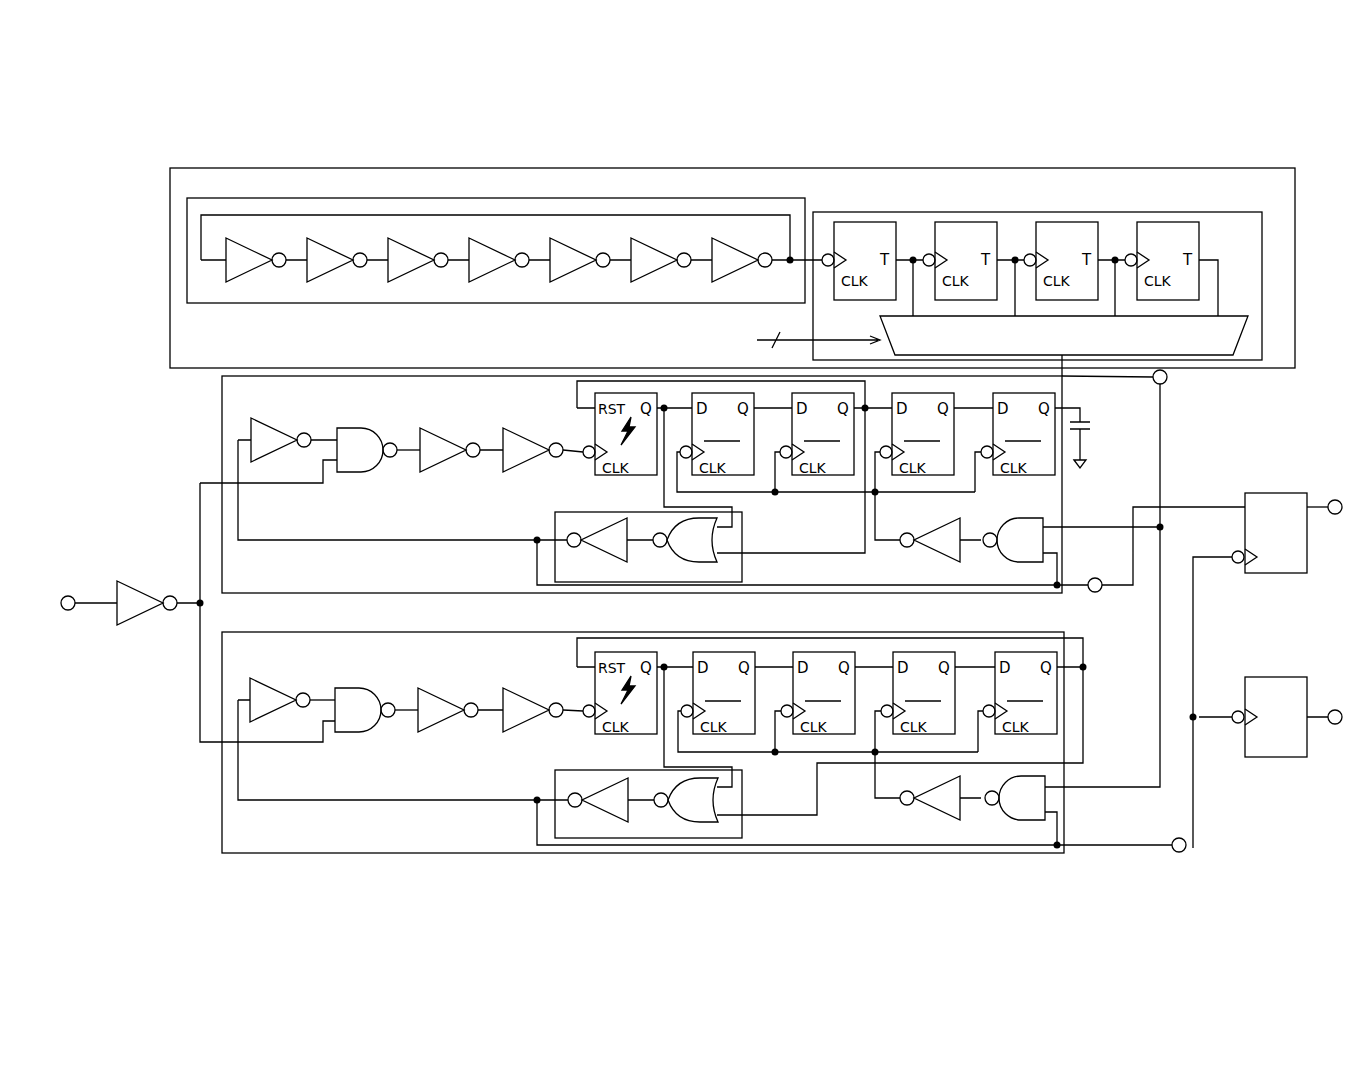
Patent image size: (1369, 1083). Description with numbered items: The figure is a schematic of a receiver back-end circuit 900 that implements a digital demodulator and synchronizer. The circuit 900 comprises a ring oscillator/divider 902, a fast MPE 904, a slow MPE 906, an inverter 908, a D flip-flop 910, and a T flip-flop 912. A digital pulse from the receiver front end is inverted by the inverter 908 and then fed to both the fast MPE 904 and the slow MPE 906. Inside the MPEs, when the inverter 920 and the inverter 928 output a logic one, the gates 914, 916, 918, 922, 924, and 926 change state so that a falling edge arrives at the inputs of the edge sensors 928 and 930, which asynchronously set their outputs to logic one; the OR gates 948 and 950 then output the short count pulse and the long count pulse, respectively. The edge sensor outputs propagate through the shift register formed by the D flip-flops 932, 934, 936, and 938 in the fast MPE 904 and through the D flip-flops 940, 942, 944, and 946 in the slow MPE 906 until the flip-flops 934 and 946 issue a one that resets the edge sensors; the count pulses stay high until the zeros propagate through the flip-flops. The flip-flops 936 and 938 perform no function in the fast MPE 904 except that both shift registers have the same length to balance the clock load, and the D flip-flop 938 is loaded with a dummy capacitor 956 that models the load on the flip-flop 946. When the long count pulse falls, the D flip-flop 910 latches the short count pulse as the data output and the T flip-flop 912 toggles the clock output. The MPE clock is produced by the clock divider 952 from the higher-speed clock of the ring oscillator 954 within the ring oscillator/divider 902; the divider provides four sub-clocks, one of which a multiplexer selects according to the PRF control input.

The circuit 900 is at (722, 97).
The ring oscillator/divider (RO) 902 is at (275, 168).
The fast MPE 904 is at (222, 410).
The slow MPE 906 is at (222, 780).
The inverter 908 is at (147, 619).
The D flip-flop 910 is at (1283, 493).
The T flip-flop 912 is at (1267, 677).
The gate 914 is at (355, 428).
The gate 916 is at (425, 428).
The gate 918 is at (505, 428).
The inverter 920 is at (275, 425).
The gate 922 is at (355, 687).
The gate 924 is at (425, 687).
The gate 926 is at (512, 687).
The inverter / edge sensor 928 is at (583, 422).
The edge sensor 930 is at (590, 687).
The D flip-flop 932 is at (826, 442).
The D flip-flop 934 is at (833, 442).
The D flip-flop 936 is at (934, 442).
The D flip-flop 938 is at (1027, 442).
The D flip-flop 940 is at (828, 702).
The D flip-flop 942 is at (834, 702).
The D flip-flop 944 is at (935, 702).
The D flip-flop 946 is at (1030, 702).
The OR gate 948 is at (745, 545).
The OR gate 950 is at (555, 780).
The clock divider 952 is at (1050, 212).
The ring oscillator 954 is at (566, 198).
The dummy capacitor C_balance 956 is at (1094, 423).